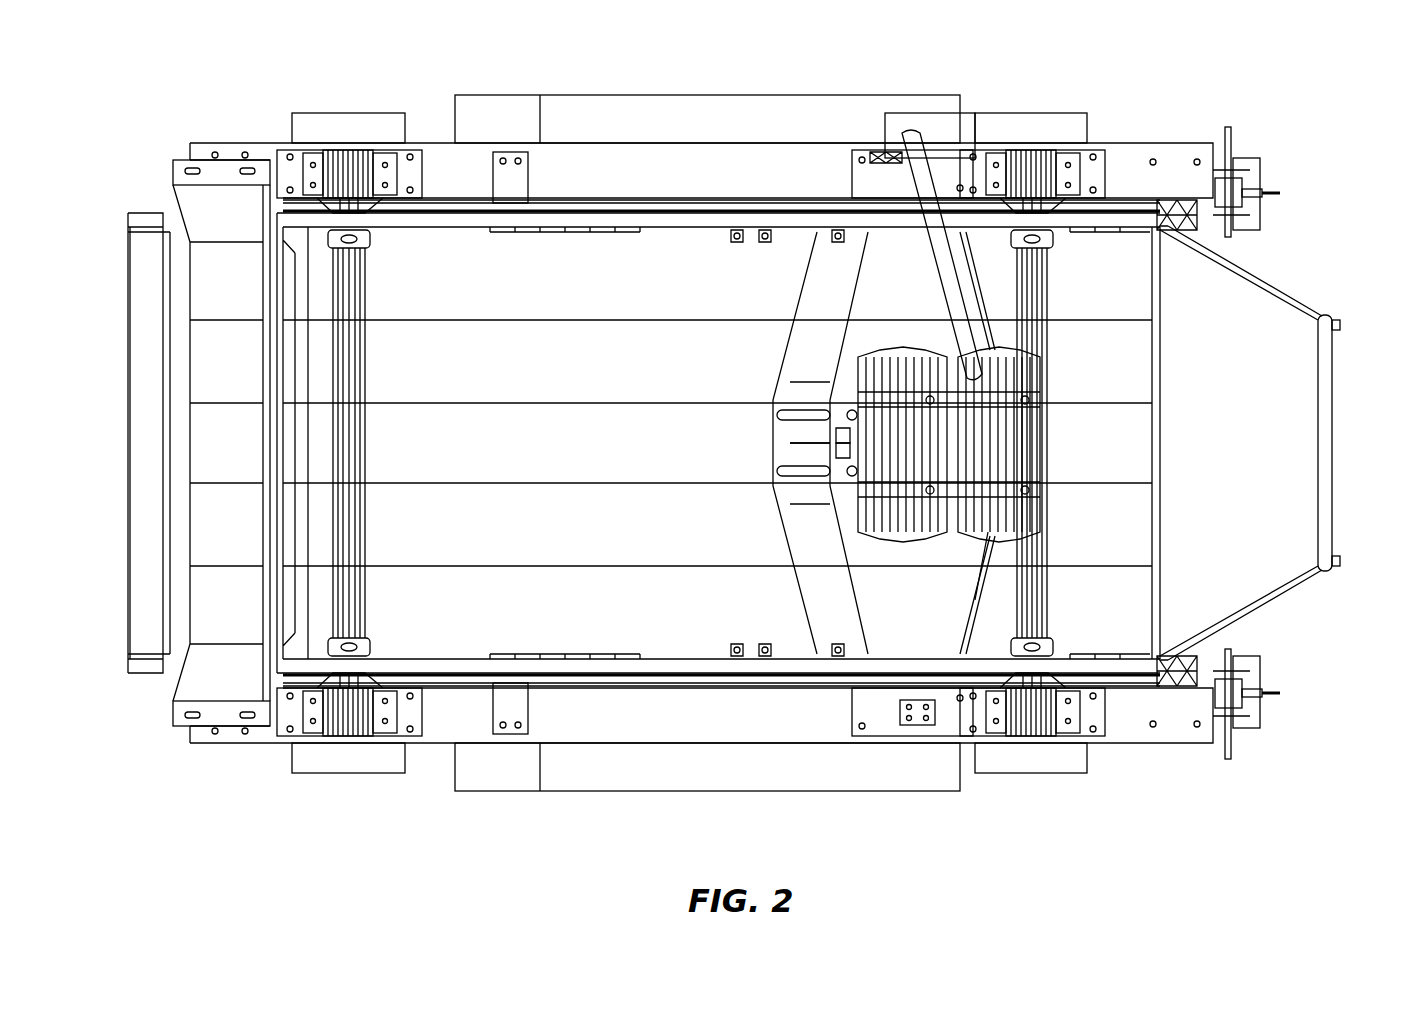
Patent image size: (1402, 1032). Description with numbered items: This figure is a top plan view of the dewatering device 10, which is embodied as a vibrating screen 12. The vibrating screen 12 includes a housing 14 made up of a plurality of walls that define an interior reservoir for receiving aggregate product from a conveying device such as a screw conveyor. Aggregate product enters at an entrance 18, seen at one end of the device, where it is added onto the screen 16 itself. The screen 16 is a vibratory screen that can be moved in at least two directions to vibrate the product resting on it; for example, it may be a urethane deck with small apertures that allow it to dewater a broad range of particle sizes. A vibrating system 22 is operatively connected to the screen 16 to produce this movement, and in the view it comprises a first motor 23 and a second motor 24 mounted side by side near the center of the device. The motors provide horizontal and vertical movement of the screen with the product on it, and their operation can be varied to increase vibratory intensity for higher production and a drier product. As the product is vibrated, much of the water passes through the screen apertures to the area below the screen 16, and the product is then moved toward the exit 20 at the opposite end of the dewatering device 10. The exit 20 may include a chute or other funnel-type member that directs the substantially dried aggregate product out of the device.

The dewatering device 10 is at (1088, 79).
The vibrating screen 12 is at (437, 138).
The housing 14 is at (618, 158).
The screen 16 is at (222, 378).
The entrance 18 is at (147, 462).
The exit 20 is at (1335, 425).
The vibrating system 22 is at (935, 349).
The first motor 23 is at (868, 365).
The second motor 24 is at (1035, 372).